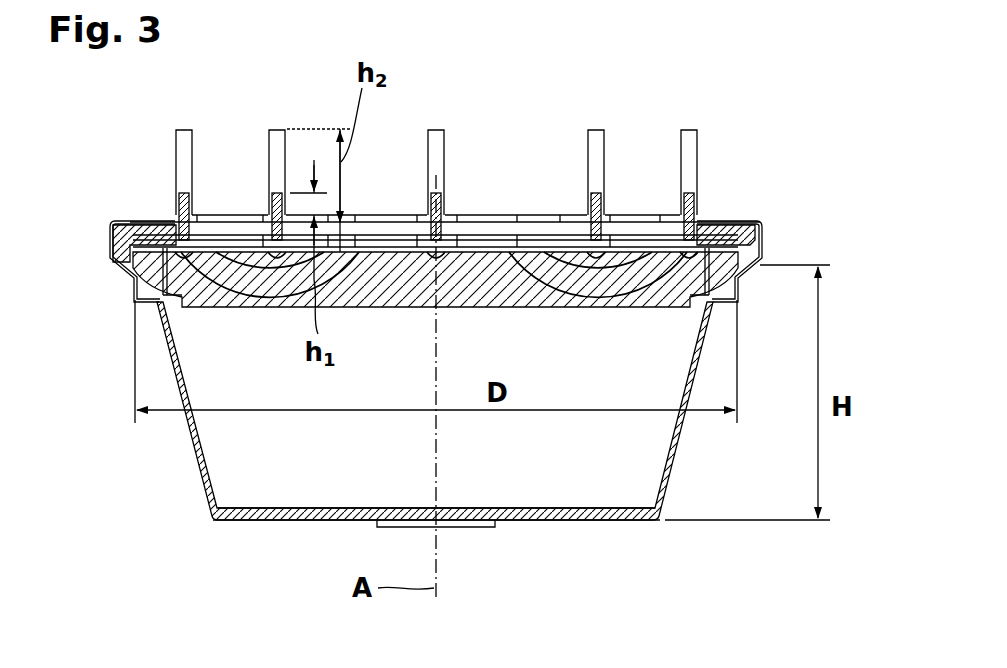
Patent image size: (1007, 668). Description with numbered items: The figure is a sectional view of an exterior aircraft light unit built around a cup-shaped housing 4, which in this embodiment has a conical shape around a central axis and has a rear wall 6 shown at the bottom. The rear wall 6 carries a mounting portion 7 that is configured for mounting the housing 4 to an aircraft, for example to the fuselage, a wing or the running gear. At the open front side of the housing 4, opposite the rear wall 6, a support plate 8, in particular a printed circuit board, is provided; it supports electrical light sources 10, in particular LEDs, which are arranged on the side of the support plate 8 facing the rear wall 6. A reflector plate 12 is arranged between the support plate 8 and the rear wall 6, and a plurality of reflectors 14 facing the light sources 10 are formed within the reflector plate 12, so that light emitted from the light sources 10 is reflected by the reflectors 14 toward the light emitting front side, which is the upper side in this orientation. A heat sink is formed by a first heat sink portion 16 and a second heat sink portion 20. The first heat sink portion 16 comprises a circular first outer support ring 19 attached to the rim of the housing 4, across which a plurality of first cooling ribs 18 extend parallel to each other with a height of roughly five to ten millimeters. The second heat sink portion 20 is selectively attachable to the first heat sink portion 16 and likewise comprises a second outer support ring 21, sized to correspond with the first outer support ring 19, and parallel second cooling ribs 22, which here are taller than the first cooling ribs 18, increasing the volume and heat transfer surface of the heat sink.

The housing 4 is at (477, 361).
The rear wall 6 is at (585, 521).
The mounting portion 7 is at (485, 528).
The support plate 8 is at (525, 247).
The light sources 10 is at (277, 262).
The reflector plate 12 is at (412, 295).
The reflectors 14 is at (229, 275).
The first heat sink portion 16 is at (485, 222).
The first cooling ribs 18 is at (178, 193).
The first outer support ring 19 is at (752, 225).
The second heat sink portion 20 is at (445, 168).
The second outer support ring 21 is at (735, 210).
The second cooling ribs 22 is at (183, 129).